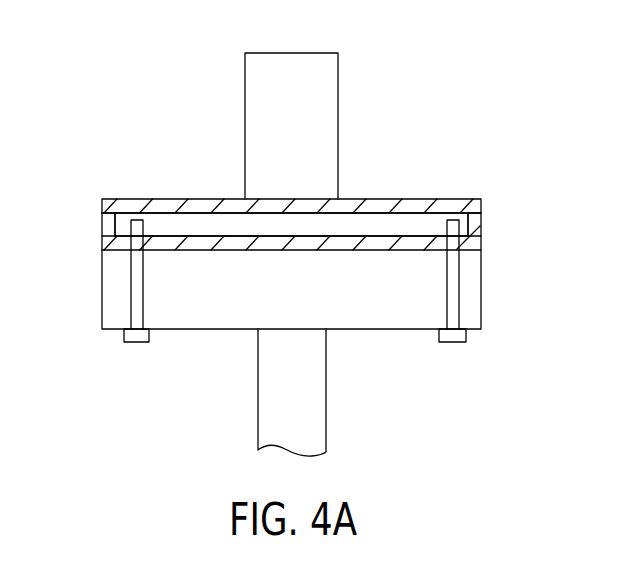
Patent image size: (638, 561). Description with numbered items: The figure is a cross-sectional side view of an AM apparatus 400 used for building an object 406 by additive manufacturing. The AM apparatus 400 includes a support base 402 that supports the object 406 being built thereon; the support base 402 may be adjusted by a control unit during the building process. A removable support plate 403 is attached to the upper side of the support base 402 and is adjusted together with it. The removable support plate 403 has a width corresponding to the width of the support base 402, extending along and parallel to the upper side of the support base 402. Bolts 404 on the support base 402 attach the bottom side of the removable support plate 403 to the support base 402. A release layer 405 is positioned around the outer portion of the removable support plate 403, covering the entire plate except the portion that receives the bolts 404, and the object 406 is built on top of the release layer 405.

The AM apparatus 400 is at (113, 95).
The support base 402 is at (470, 302).
The removable support plate 403 is at (433, 225).
The bolts 404 is at (452, 342).
The release layer 405 is at (475, 215).
The object 406 is at (325, 67).